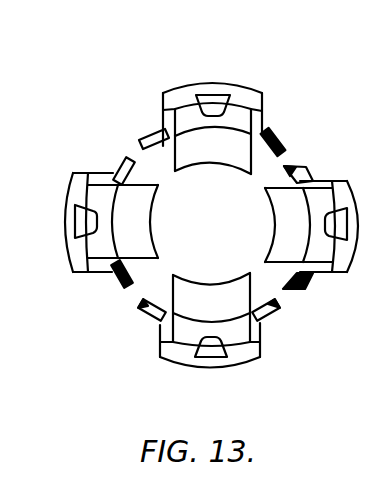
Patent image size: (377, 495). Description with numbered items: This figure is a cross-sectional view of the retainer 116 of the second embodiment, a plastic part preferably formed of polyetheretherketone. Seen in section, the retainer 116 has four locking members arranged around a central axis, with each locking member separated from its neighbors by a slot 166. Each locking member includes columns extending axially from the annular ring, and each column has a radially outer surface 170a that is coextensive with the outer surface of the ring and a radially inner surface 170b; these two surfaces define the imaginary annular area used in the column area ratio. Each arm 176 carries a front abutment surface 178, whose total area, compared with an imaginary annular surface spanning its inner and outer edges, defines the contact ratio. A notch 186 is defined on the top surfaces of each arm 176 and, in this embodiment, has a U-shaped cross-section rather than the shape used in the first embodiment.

The retainer 116 is at (201, 196).
The slot 166 is at (283, 295).
The outer surface of column 170a is at (279, 143).
The inner surface of column 170b is at (141, 165).
The arm 176 is at (250, 151).
The front abutment surface 178 is at (214, 153).
The notch 186 is at (213, 99).